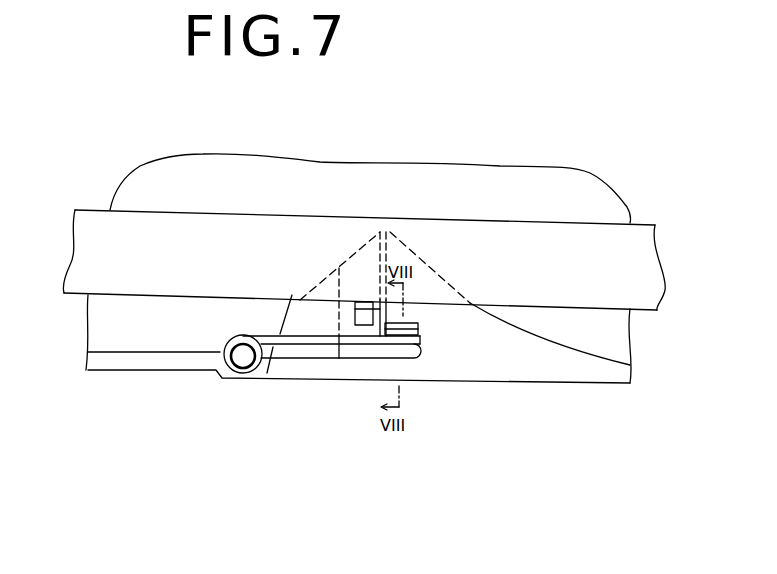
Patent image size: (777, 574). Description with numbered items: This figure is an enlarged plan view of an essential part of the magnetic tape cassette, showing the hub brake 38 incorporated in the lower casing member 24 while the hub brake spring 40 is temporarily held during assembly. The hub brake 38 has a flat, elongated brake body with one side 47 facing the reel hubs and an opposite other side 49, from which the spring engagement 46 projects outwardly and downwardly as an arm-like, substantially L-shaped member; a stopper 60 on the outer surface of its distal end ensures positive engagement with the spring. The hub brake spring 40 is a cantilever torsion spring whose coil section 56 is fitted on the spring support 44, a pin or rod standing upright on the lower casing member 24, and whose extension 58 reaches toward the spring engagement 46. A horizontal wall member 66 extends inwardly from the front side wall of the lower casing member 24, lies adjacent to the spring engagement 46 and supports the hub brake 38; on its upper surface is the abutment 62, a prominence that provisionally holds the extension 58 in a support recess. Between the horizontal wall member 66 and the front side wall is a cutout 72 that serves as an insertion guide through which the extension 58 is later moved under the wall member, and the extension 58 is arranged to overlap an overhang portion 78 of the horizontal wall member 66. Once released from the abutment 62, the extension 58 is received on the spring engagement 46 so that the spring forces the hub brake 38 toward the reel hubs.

The lower casing member 24 is at (97, 319).
The hub brake 38 is at (190, 222).
The hub brake spring 40 is at (306, 336).
The spring support 44 is at (242, 363).
The spring engagement 46 is at (363, 302).
The one side of the hub brake body 47 is at (531, 221).
The other side of the hub brake body 49 is at (181, 297).
The coil section 56 is at (242, 375).
The extension 58 is at (353, 343).
The stopper 60 is at (356, 315).
The abutment 62 is at (418, 328).
The horizontal wall member 66 is at (517, 346).
The cutout 72 is at (413, 357).
The overhang portion 78 is at (443, 287).